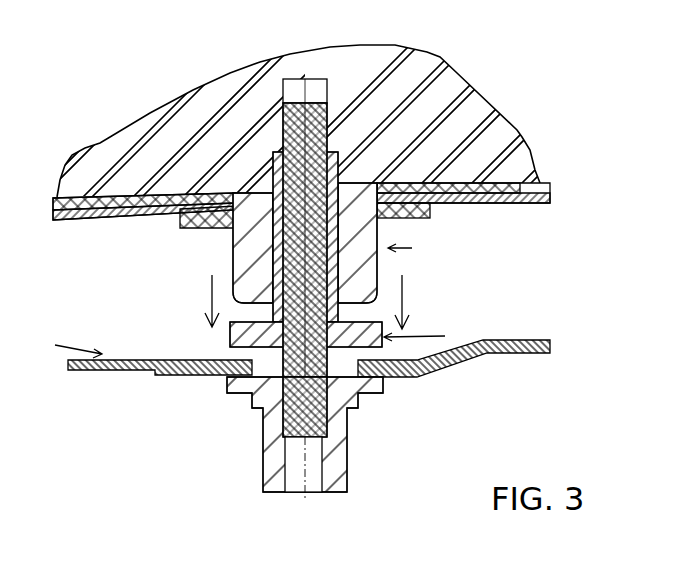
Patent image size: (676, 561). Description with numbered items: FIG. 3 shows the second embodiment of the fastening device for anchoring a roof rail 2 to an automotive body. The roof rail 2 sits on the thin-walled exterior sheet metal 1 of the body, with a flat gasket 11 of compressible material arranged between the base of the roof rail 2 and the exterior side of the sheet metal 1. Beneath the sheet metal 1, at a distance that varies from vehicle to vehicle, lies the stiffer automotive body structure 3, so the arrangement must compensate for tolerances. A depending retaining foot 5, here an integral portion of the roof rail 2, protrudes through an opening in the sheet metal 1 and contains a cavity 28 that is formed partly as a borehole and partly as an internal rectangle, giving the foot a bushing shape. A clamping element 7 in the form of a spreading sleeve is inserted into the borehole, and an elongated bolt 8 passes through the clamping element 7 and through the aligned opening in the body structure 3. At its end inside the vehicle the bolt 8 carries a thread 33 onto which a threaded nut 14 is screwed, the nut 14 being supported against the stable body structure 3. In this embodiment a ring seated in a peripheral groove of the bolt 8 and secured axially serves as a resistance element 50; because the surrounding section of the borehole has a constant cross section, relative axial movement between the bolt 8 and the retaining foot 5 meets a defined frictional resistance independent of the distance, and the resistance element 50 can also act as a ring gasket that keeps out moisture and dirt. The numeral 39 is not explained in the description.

The exterior sheet metal 1 is at (548, 190).
The roof rail 2 is at (478, 76).
The automotive body structure 3 is at (540, 350).
The retaining foot 5 is at (262, 188).
The clamping element 7 is at (340, 260).
The bolt 8 is at (330, 285).
The flat gasket 11 is at (122, 196).
The threaded nut 14 is at (337, 418).
The cavity 28 is at (272, 92).
The thread 33 is at (265, 425).
The filler block 39 is at (525, 196).
The resistance element 50 is at (340, 175).